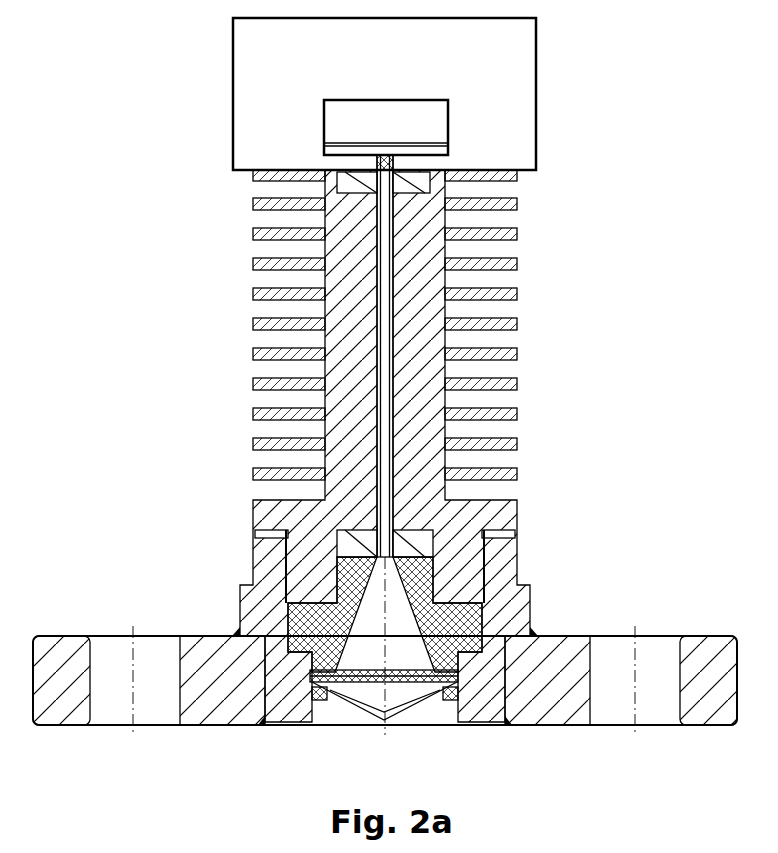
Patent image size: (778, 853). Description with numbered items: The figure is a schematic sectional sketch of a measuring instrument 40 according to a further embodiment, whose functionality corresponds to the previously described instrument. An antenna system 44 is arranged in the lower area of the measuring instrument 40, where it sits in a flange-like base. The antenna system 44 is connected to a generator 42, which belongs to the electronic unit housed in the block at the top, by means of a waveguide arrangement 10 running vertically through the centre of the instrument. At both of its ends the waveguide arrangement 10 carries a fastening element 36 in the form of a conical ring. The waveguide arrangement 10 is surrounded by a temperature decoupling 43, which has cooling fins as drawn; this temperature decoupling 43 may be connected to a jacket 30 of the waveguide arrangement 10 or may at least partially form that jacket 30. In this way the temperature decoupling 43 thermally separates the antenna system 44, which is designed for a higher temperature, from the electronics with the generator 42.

The waveguide arrangement 10 is at (388, 382).
The jacket 30 is at (574, 330).
The fastening element 36 is at (333, 187).
The measuring instrument 40 is at (184, 88).
The generator 42 is at (405, 141).
The temperature decoupling 43 is at (574, 330).
The antenna system 44 is at (451, 737).